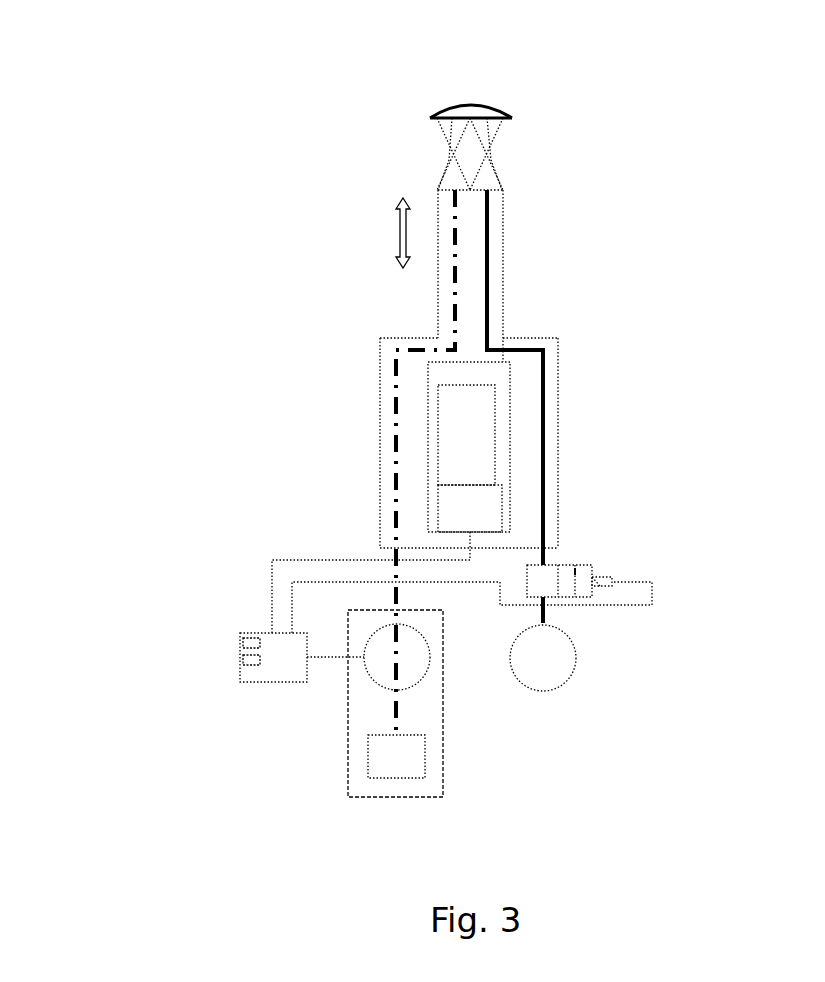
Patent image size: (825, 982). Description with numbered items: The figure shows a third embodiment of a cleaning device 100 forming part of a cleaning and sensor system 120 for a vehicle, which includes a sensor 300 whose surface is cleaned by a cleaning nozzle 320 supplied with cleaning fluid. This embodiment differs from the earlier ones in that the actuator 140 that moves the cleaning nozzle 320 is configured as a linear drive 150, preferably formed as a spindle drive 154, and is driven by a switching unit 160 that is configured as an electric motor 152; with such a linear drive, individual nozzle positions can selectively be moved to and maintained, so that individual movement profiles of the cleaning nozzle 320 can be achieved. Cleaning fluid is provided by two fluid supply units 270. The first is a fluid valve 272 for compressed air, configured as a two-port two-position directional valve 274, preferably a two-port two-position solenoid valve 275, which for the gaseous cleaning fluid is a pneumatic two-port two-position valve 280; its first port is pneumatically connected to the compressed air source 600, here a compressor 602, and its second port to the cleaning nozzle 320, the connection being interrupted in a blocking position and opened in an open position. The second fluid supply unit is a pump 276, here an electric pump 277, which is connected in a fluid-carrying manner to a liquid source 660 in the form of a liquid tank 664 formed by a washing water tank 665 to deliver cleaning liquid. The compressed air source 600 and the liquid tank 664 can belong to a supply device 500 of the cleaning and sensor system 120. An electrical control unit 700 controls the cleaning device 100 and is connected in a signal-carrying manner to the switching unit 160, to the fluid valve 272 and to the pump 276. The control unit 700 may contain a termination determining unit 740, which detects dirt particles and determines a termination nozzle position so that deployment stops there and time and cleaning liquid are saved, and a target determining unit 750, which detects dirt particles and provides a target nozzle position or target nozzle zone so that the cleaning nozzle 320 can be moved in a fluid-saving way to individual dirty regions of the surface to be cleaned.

The cleaning device 100 is at (577, 59).
The cleaning and sensor system 120 is at (630, 70).
The sensor 300 is at (473, 110).
The cleaning nozzle 320 is at (434, 167).
The actuator 140 is at (571, 435).
The linear drive 150 is at (571, 435).
The spindle drive 154 is at (512, 445).
The switching unit 160 is at (568, 504).
The electric motor 152 is at (493, 517).
The fluid supply unit 270 is at (660, 557).
The fluid valve 272 is at (660, 557).
The 2/2-way valve 274 is at (660, 557).
The 2/2-way solenoid valve 275 is at (660, 557).
The pneumatic 2/2-way valve 280 is at (590, 573).
The pump 276 is at (260, 703).
The electric pump 277 is at (380, 672).
The compressed air source 600 is at (612, 663).
The compressor 602 is at (562, 667).
The liquid source 660 is at (348, 770).
The liquid tank 664 is at (416, 790).
The washing water tank 665 is at (410, 765).
The control unit 700 is at (213, 651).
The termination determining unit 740 is at (243, 643).
The target determining unit 750 is at (247, 673).
The supply device 500 is at (600, 788).